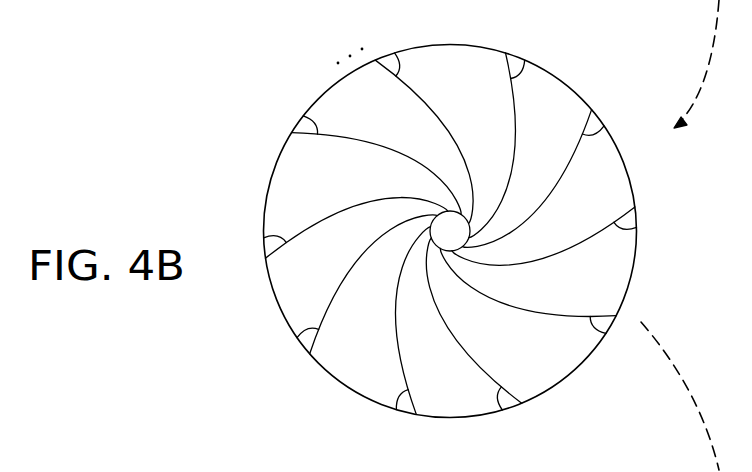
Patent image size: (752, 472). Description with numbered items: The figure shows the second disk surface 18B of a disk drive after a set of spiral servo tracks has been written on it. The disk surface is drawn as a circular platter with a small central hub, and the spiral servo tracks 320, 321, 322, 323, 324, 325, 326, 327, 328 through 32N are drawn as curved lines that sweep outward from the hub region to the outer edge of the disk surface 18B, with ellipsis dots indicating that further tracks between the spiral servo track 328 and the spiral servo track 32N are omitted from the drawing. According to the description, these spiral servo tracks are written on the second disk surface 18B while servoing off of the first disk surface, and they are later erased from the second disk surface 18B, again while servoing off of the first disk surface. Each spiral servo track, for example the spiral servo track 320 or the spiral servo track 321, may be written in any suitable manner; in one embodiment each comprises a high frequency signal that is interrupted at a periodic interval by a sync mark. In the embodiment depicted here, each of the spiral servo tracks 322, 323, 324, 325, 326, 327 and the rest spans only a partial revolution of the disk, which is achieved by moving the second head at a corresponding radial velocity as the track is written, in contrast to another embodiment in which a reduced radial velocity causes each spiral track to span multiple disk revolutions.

The second disk surface 18B is at (568, 82).
The spiral servo track 320 is at (525, 60).
The spiral servo track 321 is at (604, 126).
The spiral servo track 322 is at (636, 227).
The spiral servo track 323 is at (606, 333).
The spiral servo track 324 is at (502, 410).
The spiral servo track 325 is at (396, 410).
The spiral servo track 326 is at (297, 338).
The spiral servo track 327 is at (264, 238).
The spiral servo track 328 is at (303, 116).
The spiral servo track 32N is at (394, 53).